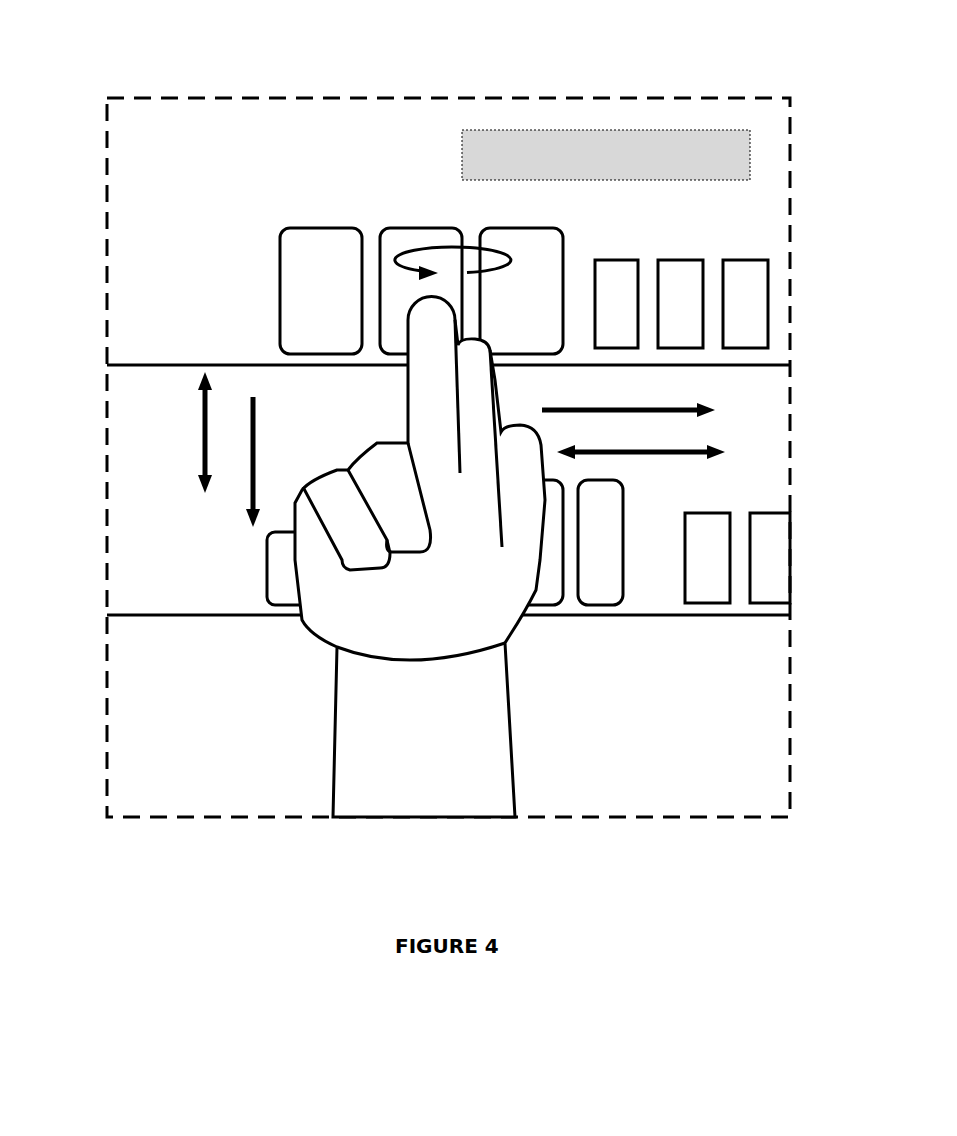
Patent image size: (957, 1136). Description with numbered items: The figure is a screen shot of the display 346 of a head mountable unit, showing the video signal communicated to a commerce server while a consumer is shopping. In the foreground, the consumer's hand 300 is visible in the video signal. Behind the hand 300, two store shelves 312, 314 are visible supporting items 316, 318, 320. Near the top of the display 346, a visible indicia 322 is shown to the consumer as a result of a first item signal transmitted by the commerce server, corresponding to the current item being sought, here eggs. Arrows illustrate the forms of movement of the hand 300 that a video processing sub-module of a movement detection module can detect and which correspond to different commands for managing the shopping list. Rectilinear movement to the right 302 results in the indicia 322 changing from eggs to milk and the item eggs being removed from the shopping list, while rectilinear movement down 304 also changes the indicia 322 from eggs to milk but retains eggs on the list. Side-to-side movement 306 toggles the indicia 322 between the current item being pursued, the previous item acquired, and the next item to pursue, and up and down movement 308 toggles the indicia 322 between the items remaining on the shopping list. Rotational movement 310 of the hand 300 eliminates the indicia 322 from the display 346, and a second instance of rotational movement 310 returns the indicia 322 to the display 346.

The consumer's hand 300 is at (462, 542).
The movement to the right 302 is at (637, 408).
The movement down 304 is at (253, 478).
The side-to-side movement 306 is at (653, 453).
The up and down movement 308 is at (205, 415).
The rotational movement 310 is at (425, 250).
The store shelf 312 is at (140, 368).
The store shelf 314 is at (146, 618).
The item 316 is at (320, 293).
The item 318 is at (745, 300).
The item 320 is at (707, 560).
The visible indicia 322 is at (690, 130).
The display 346 is at (505, 98).